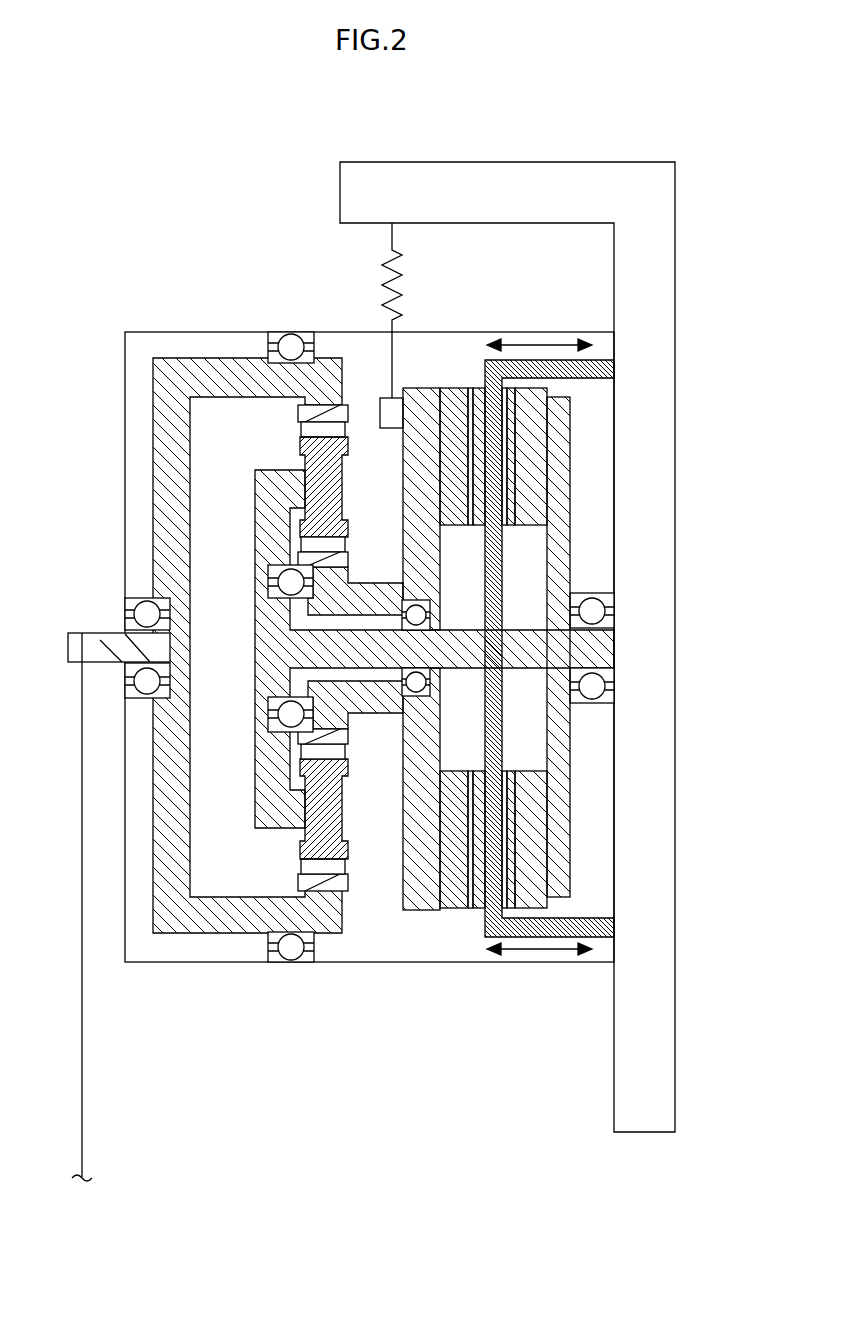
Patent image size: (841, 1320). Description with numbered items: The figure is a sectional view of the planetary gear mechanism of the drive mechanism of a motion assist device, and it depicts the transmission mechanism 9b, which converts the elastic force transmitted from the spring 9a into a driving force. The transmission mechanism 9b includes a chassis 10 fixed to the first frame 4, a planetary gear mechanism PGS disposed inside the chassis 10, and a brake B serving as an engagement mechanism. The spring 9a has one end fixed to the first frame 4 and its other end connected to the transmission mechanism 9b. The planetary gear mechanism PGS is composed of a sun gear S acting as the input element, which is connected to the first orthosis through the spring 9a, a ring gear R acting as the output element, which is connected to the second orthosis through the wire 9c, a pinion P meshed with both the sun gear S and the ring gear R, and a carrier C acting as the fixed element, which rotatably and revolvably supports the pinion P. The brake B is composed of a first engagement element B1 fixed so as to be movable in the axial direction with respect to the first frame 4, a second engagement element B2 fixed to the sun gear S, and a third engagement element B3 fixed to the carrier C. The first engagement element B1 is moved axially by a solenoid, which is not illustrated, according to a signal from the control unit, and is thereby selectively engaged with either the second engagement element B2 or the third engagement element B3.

The chassis 10 is at (162, 331).
The transmission mechanism 9b is at (532, 616).
The first frame 4 is at (672, 290).
The spring 9a is at (382, 281).
The planetary gear mechanism PGS is at (334, 671).
The ring gear R is at (160, 508).
The carrier C is at (258, 648).
The pinion P is at (346, 492).
The sun gear S is at (413, 911).
The brake B is at (575, 624).
The first engagement element B1 is at (614, 368).
The second engagement element B2 is at (468, 386).
The third engagement element B3 is at (548, 425).
The wire 9c is at (80, 862).